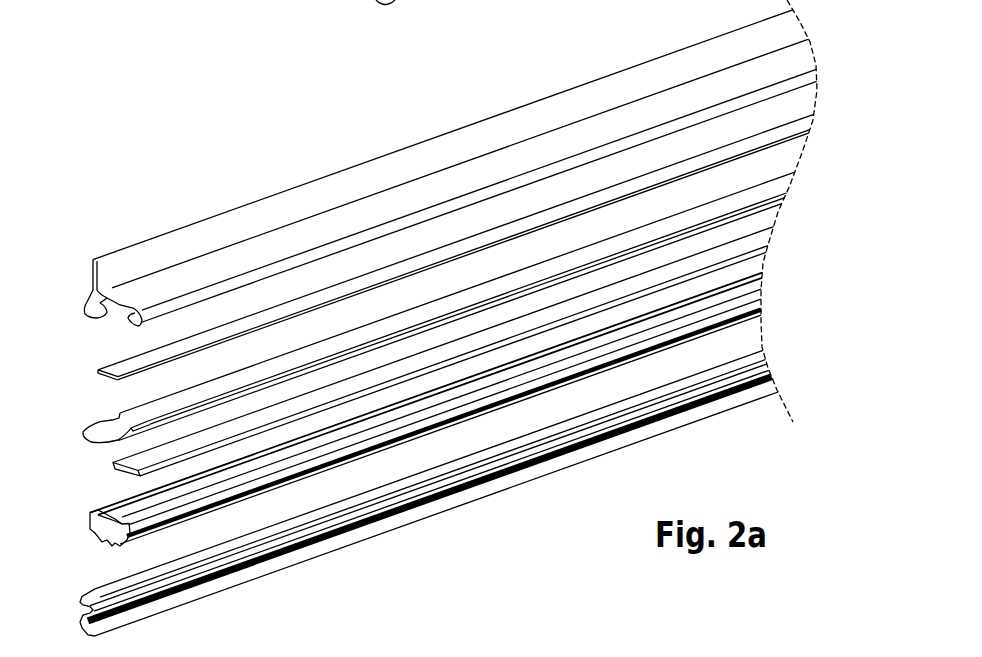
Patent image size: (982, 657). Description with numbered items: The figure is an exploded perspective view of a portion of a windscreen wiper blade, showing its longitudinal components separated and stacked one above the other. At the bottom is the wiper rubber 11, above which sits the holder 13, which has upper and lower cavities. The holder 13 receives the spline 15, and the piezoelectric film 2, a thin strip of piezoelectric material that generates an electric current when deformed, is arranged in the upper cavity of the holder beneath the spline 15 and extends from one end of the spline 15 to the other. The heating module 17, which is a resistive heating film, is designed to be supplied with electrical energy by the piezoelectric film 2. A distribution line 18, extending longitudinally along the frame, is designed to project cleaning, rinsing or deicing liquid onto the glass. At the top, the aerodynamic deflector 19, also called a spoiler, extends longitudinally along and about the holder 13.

The aerodynamic deflector 19 is at (283, 210).
The distribution line 18 is at (112, 307).
The heating module 17 is at (147, 362).
The spline 15 is at (153, 412).
The piezoelectric film 2 is at (133, 458).
The holder 13 is at (125, 508).
The wiper rubber 11 is at (232, 582).